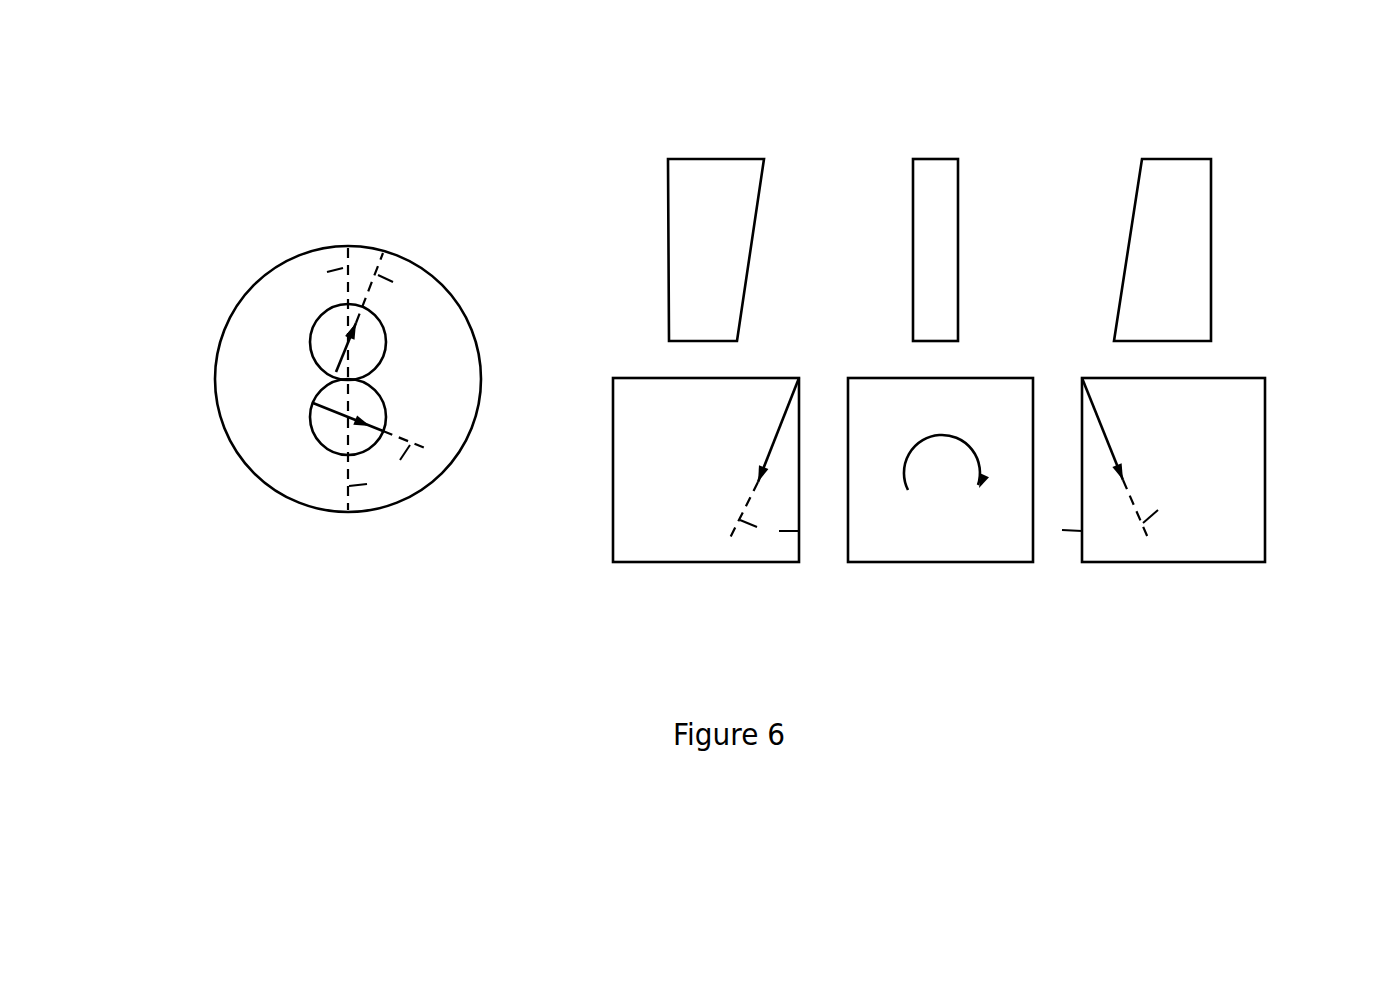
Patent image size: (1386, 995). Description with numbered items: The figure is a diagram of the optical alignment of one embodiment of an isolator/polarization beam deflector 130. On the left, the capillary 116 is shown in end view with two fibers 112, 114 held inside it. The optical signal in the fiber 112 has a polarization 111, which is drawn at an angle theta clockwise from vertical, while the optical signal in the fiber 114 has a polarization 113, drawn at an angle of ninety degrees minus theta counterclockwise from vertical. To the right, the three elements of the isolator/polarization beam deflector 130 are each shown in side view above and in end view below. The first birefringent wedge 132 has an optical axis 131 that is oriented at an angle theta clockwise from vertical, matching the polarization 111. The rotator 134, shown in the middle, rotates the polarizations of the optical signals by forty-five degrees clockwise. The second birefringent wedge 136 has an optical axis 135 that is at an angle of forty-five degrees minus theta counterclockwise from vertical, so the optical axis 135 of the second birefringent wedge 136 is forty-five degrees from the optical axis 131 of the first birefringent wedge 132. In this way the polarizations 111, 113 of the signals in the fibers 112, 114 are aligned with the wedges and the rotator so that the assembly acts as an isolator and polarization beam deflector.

The polarization 111 is at (346, 351).
The fiber 112 is at (321, 315).
The polarization 113 is at (345, 414).
The fiber 114 is at (320, 442).
The capillary 116 is at (482, 355).
The isolator/polarization beam deflector 130 is at (977, 40).
The optical axis 131 is at (773, 433).
The first birefringent wedge 132 is at (675, 157).
The rotator 134 is at (920, 157).
The optical axis 135 is at (1105, 432).
The second birefringent wedge 136 is at (1142, 157).